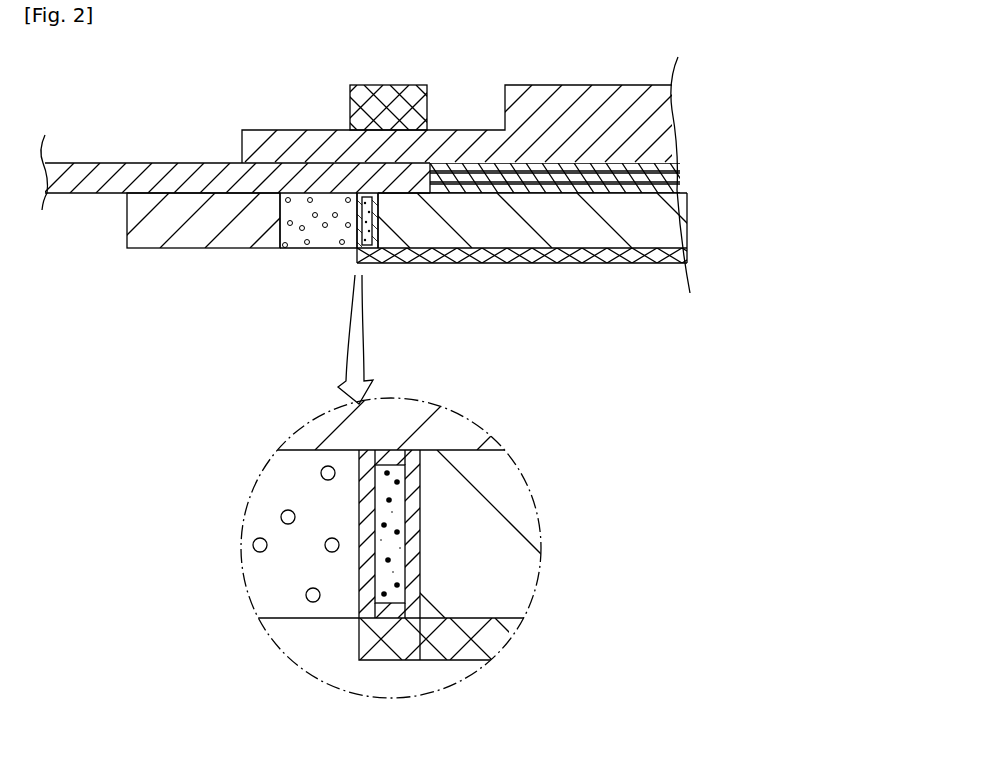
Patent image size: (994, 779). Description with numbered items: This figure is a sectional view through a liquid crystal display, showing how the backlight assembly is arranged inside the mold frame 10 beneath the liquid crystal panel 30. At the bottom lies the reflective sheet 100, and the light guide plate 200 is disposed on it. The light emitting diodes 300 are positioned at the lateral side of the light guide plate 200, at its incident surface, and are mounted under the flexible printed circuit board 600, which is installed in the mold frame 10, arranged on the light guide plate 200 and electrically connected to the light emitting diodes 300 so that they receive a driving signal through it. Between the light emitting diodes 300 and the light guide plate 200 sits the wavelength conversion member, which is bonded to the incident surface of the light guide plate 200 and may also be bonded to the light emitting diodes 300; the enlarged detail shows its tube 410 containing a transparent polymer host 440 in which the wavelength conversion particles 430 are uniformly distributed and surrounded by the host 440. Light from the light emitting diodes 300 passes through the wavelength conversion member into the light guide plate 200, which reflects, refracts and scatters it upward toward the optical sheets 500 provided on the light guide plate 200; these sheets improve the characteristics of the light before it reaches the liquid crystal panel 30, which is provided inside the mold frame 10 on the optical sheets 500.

The mold frame 10 is at (169, 240).
The liquid crystal panel 30 is at (583, 100).
The reflective sheet 100 is at (447, 255).
The light guide plate 200 is at (523, 230).
The light emitting diodes 300 is at (298, 250).
The tube 410 is at (412, 545).
The wavelength conversion particles 430 is at (397, 483).
The host 440 is at (383, 510).
The optical sheets 500 is at (598, 262).
The flexible printed circuit board 600 is at (170, 178).